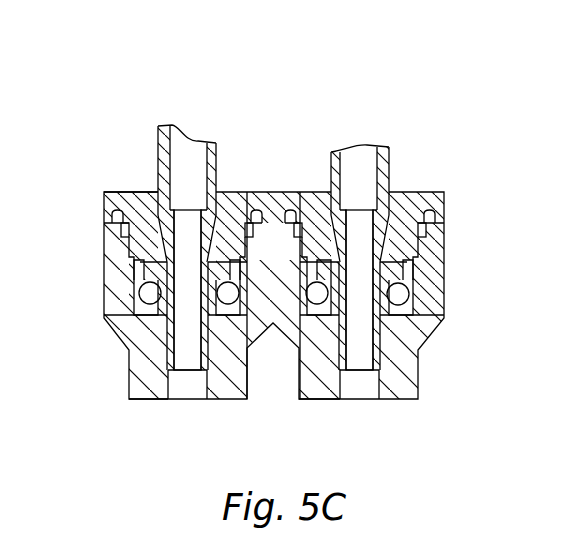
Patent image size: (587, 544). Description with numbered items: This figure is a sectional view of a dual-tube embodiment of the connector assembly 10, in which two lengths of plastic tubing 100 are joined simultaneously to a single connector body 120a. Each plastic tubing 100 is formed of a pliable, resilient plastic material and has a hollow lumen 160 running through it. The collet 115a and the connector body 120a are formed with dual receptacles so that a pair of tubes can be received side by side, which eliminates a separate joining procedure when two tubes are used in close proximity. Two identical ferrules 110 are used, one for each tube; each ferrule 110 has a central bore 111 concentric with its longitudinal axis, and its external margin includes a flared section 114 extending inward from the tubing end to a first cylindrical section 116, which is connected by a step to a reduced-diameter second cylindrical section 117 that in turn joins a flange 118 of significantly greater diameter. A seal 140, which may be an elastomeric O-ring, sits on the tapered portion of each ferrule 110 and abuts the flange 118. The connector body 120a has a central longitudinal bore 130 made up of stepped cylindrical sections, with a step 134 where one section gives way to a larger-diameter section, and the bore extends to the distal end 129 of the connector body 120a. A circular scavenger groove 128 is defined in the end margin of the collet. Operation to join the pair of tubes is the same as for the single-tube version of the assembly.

The connector assembly 10 is at (207, 121).
The plastic tubing 100 is at (157, 126).
The hollow lumen 160 is at (370, 164).
The ferrule 110 is at (130, 399).
The central bore 111 is at (162, 353).
The flared section 114 is at (209, 215).
The collet 115a is at (143, 198).
The first cylindrical section 116 is at (223, 235).
The second cylindrical section 117 is at (225, 255).
The flange 118 is at (128, 255).
The connector body 120a is at (115, 287).
The scavenger groove 128 is at (110, 212).
The distal end 129 is at (143, 400).
The central longitudinal bore 130 is at (183, 398).
The step 134 is at (130, 325).
The seal 140 is at (150, 296).